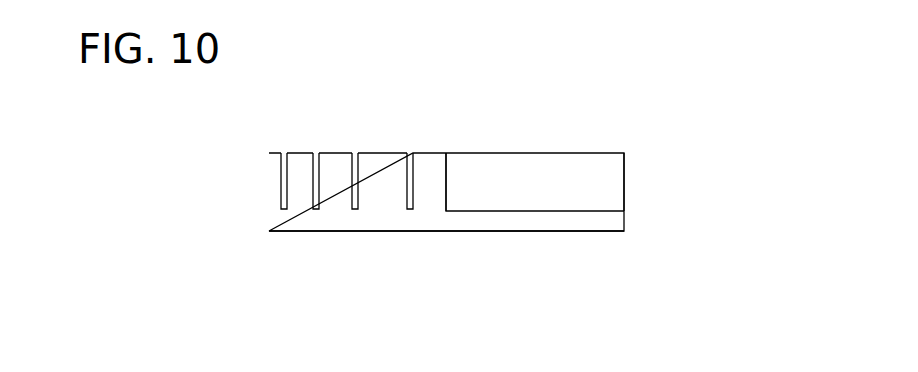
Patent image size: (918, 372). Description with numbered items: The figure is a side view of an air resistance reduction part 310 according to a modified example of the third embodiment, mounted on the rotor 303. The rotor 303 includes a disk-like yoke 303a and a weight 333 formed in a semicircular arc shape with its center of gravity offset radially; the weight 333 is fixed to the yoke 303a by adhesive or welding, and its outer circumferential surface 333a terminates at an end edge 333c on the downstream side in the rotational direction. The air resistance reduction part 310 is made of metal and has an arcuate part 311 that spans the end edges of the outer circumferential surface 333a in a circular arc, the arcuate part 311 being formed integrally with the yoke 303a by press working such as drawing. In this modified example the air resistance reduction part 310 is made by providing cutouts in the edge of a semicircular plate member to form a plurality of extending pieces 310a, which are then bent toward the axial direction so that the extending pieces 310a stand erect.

The rotor 303 is at (630, 192).
The yoke 303a is at (478, 232).
The air resistance reduction part 310 is at (248, 142).
The extending pieces 310a is at (268, 178).
The arcuate part 311 is at (384, 162).
The weight 333 is at (563, 173).
The outer circumferential surface 333a is at (624, 171).
The end edge 333c is at (446, 170).